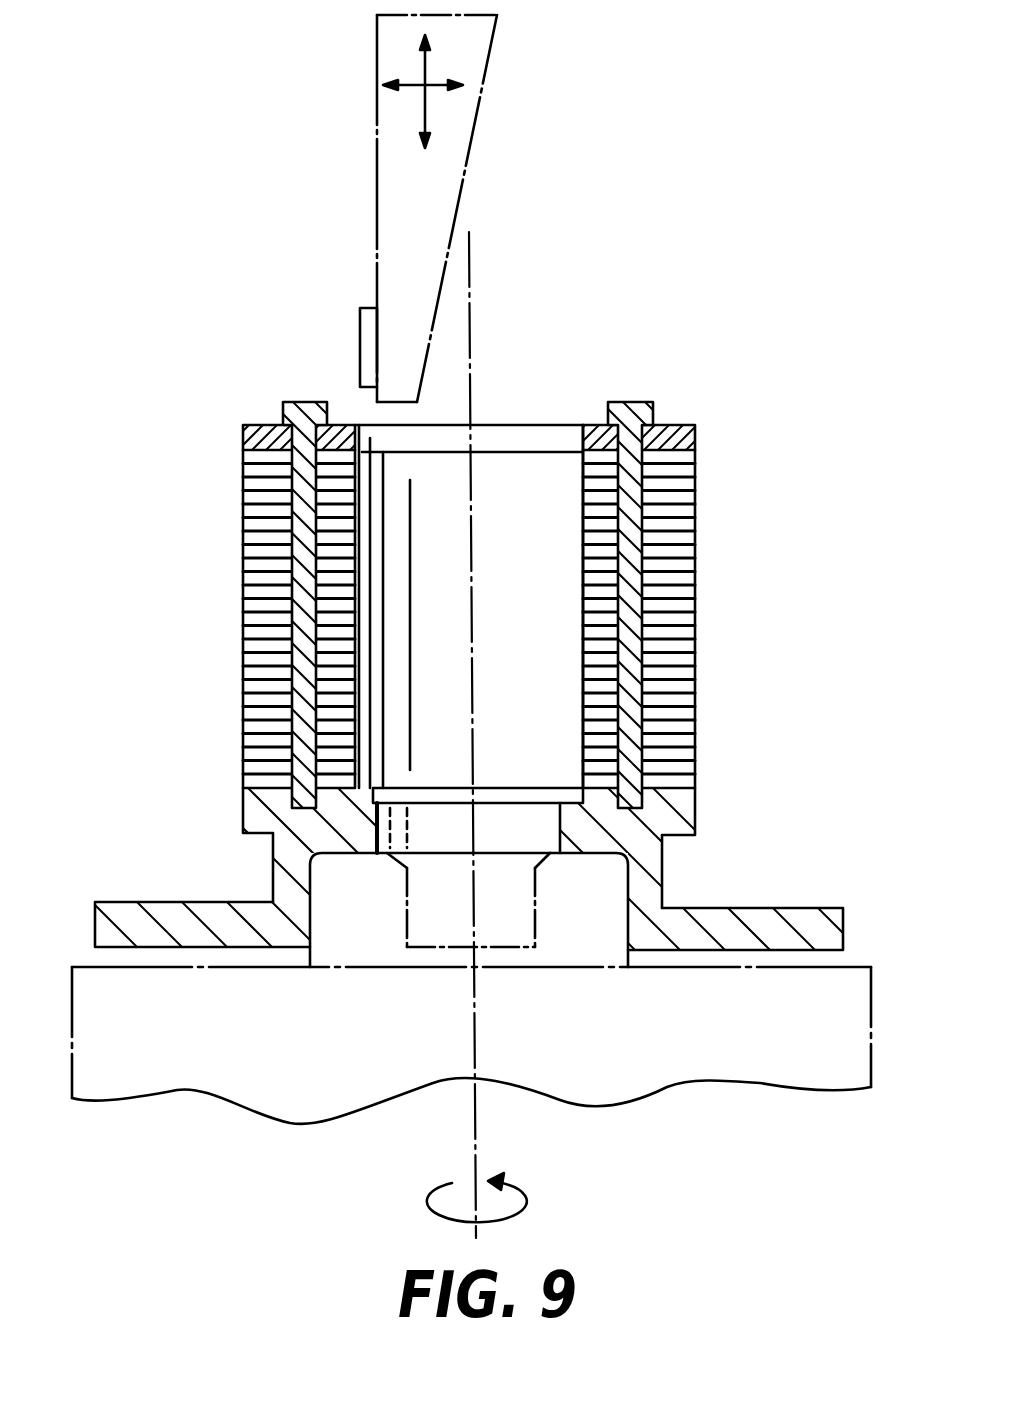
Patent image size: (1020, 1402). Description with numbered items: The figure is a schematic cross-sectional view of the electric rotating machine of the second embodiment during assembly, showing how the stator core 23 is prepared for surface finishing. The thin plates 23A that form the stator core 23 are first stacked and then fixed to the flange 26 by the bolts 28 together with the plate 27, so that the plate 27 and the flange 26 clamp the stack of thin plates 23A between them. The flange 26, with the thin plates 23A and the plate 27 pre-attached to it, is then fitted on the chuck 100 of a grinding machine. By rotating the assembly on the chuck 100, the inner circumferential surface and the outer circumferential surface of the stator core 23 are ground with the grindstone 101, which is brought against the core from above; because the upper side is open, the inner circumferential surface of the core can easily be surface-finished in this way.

The stator core 23 is at (250, 612).
The thin plates 23A is at (683, 772).
The flange 26 is at (148, 920).
The plate 27 is at (243, 437).
The bolts 28 is at (309, 400).
The chuck 100 is at (607, 900).
The grindstone 101 is at (360, 318).